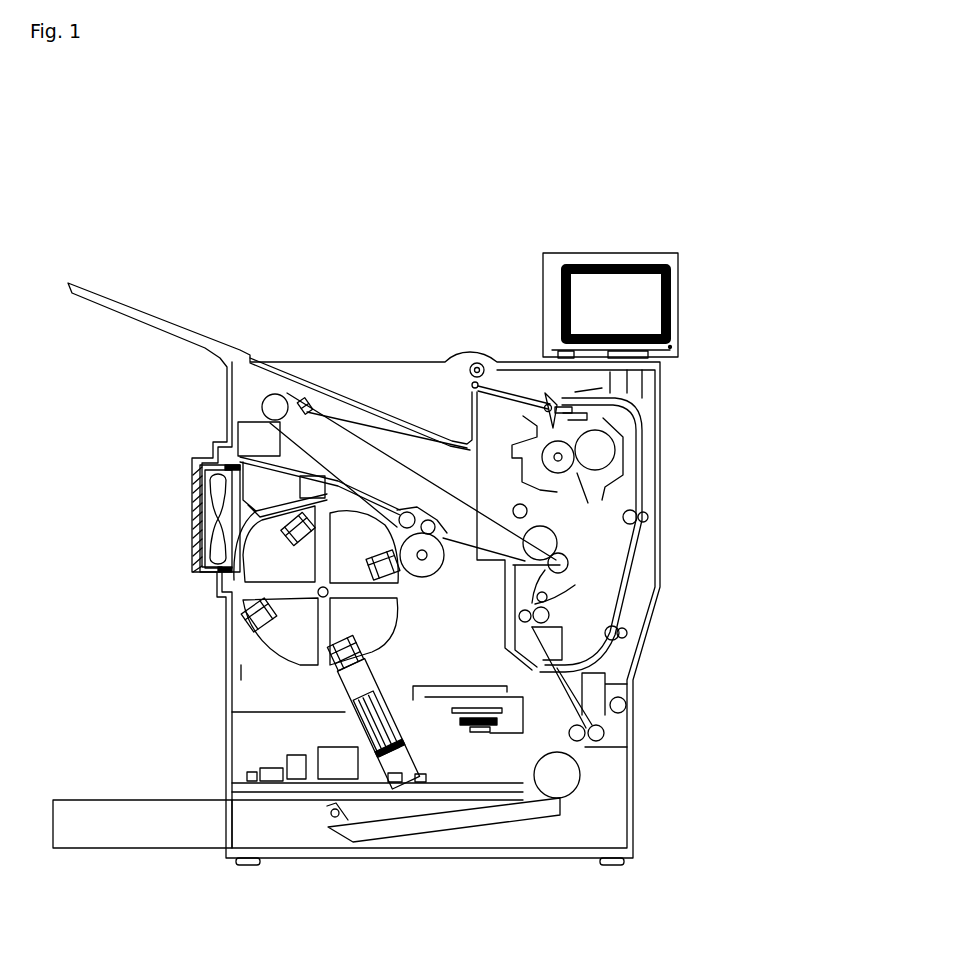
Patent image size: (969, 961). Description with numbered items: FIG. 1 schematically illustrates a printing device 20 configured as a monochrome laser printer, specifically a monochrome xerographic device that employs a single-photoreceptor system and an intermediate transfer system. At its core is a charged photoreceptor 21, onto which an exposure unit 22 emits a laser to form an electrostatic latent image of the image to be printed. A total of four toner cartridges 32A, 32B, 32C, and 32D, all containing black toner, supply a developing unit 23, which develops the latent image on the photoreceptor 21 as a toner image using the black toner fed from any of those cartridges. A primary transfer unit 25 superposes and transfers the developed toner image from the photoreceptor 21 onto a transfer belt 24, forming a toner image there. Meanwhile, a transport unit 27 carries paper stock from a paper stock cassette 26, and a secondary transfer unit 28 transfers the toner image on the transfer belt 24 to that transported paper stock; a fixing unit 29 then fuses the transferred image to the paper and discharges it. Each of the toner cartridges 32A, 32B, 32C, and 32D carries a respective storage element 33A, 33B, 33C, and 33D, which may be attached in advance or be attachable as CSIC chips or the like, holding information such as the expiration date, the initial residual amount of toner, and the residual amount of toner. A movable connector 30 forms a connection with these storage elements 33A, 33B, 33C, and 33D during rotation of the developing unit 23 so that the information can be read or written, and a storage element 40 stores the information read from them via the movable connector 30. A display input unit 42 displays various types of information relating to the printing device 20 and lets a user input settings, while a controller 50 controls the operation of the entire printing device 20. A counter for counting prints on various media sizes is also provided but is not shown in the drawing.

The printing device 20 is at (481, 290).
The photoreceptor 21 is at (446, 532).
The exposure unit 22 is at (478, 740).
The developing unit 23 is at (258, 586).
The transfer belt 24 is at (301, 398).
The primary transfer unit 25 is at (322, 400).
The paper stock cassette 26 is at (103, 800).
The transport unit 27 is at (656, 680).
The secondary transfer unit 28 is at (575, 555).
The fixing unit 29 is at (665, 436).
The movable connector 30 is at (338, 737).
The toner cartridge 32A is at (245, 643).
The toner cartridge 32B is at (364, 631).
The toner cartridge 32C is at (364, 547).
The toner cartridge 32D is at (279, 544).
The storage element 33A is at (247, 616).
The storage element 33B is at (372, 657).
The storage element 33C is at (390, 553).
The storage element 33D is at (284, 528).
The storage element 40 is at (292, 783).
The display input unit 42 is at (678, 308).
The controller 50 is at (337, 783).